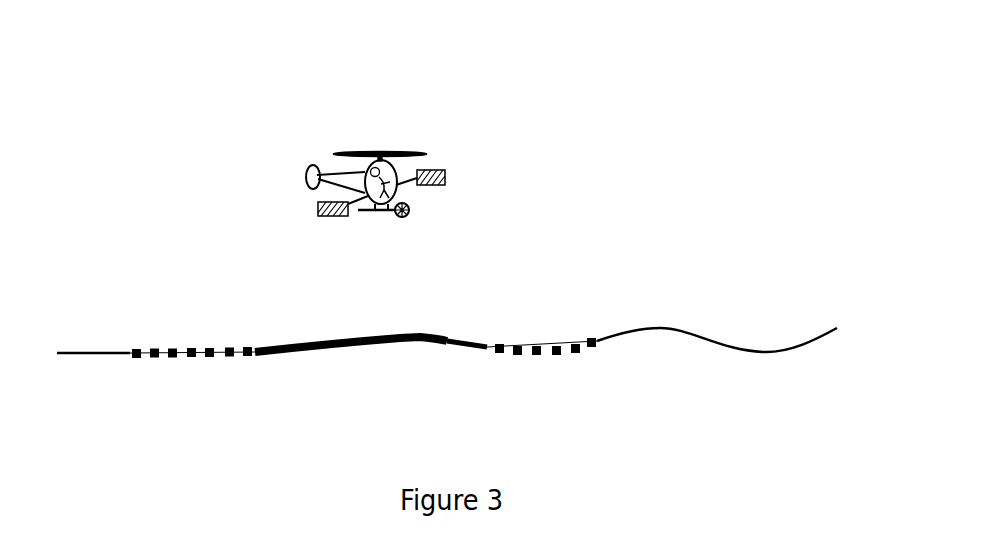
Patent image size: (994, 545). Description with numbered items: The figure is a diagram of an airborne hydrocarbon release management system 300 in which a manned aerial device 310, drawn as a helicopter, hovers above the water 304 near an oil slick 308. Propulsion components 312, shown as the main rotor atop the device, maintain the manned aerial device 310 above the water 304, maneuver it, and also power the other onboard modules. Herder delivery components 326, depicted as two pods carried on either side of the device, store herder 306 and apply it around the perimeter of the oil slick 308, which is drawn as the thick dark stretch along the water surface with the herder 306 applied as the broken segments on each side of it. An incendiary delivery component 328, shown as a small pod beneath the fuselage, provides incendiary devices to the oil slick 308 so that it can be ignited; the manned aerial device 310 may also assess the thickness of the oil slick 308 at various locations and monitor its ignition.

The airborne hydrocarbon release management system 300 is at (578, 68).
The water 304 is at (790, 354).
The herder 306 is at (517, 345).
The oil slick 308 is at (447, 337).
The manned aerial device 310 is at (347, 87).
The propulsion components 312 is at (347, 150).
The herder delivery components 326 is at (445, 170).
The incendiary delivery component 328 is at (410, 207).